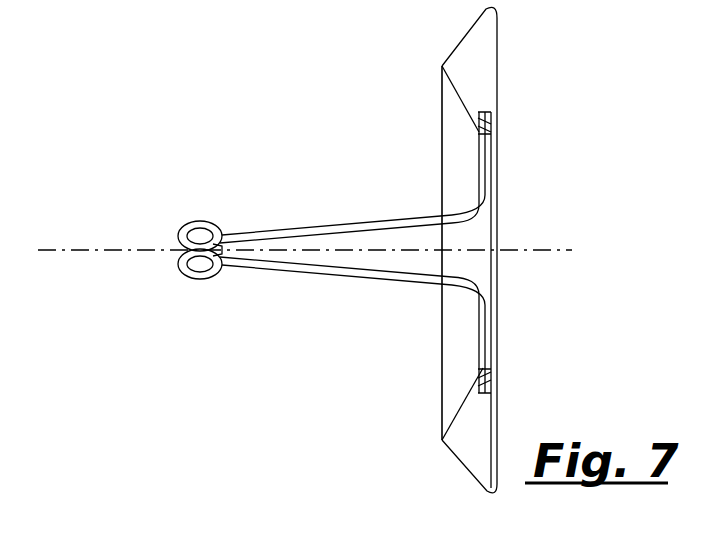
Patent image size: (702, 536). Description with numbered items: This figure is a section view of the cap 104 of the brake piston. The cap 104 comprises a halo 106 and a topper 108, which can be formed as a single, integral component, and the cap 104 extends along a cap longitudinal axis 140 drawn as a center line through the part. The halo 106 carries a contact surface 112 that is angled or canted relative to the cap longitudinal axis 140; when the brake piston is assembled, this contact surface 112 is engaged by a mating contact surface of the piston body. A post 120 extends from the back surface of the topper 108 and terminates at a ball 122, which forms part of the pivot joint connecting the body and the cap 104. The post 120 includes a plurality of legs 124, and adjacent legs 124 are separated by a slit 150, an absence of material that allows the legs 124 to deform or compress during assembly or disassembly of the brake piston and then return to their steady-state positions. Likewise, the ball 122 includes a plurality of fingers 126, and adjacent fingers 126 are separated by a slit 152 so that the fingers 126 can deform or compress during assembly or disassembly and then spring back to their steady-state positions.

The cap 104 is at (458, 250).
The halo 106 is at (410, 228).
The topper 108 is at (462, 62).
The contact surface 112 is at (458, 100).
The post 120 is at (293, 252).
The ball 122 is at (198, 254).
The leg 124 is at (335, 232).
The finger 126 is at (200, 222).
The cap longitudinal axis 140 is at (52, 252).
The slit 150 is at (430, 262).
The slit 152 is at (190, 248).